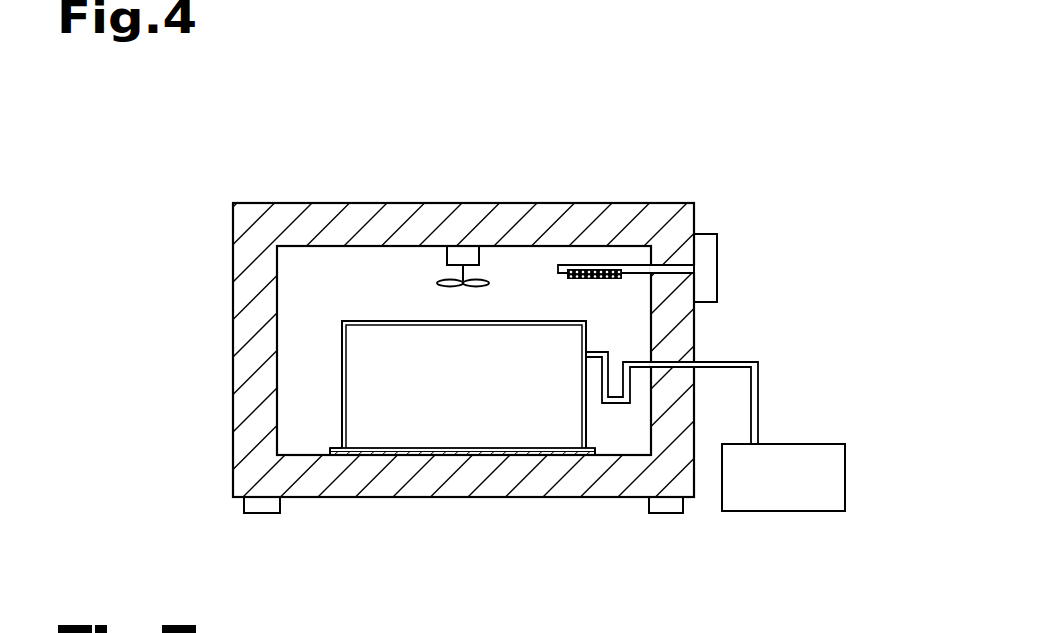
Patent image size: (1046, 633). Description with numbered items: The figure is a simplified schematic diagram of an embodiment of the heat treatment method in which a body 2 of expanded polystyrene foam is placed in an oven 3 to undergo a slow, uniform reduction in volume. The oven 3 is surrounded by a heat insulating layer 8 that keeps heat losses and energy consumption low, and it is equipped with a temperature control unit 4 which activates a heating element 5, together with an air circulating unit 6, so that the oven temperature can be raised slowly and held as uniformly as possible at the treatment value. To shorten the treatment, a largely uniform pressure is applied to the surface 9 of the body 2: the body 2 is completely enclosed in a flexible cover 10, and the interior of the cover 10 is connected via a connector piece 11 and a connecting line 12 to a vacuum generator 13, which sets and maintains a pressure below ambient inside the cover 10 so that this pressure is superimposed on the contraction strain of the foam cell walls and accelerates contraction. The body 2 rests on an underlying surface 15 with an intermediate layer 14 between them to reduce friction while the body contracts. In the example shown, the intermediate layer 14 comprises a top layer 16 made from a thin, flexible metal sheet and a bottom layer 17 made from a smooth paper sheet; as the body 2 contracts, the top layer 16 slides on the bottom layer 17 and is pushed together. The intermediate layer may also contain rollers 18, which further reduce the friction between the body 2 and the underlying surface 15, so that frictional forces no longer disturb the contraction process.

The body 2 is at (403, 340).
The oven 3 is at (512, 176).
The temperature control unit 4 is at (705, 265).
The heating element 5 is at (590, 273).
The air circulating unit 6 is at (463, 247).
The heat insulating layer 8 is at (653, 223).
The surface 9 is at (373, 316).
The flexible cover 10 is at (527, 323).
The connector piece 11 is at (593, 350).
The connecting line 12 is at (760, 382).
The vacuum generator 13 is at (770, 495).
The intermediate layer 14 is at (335, 450).
The underlying surface 15 is at (308, 447).
The top layer 16 is at (338, 455).
The bottom layer 17 is at (415, 455).
The rollers 18 is at (568, 455).